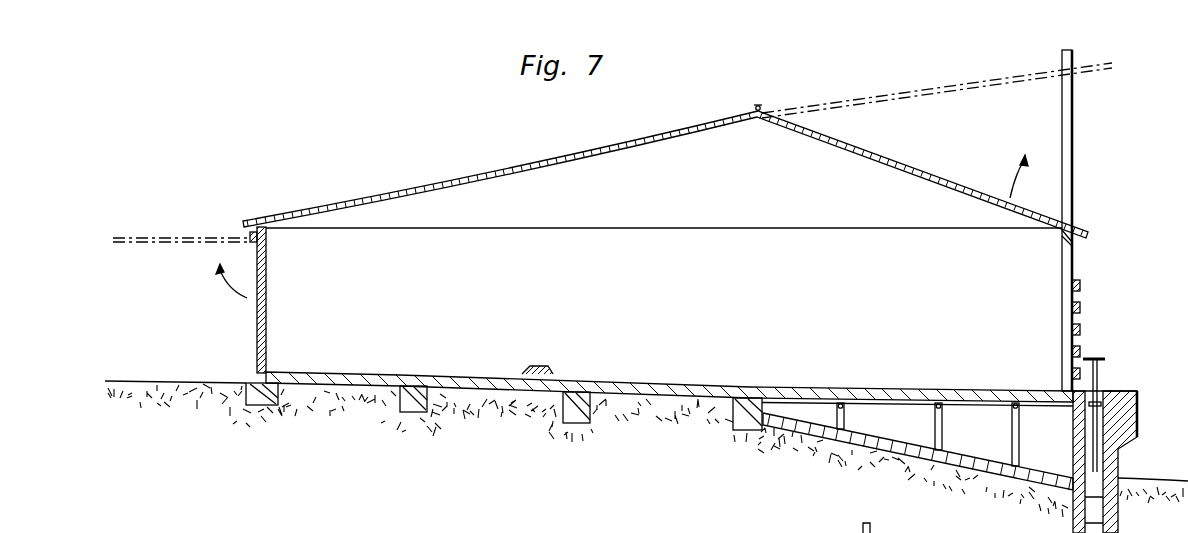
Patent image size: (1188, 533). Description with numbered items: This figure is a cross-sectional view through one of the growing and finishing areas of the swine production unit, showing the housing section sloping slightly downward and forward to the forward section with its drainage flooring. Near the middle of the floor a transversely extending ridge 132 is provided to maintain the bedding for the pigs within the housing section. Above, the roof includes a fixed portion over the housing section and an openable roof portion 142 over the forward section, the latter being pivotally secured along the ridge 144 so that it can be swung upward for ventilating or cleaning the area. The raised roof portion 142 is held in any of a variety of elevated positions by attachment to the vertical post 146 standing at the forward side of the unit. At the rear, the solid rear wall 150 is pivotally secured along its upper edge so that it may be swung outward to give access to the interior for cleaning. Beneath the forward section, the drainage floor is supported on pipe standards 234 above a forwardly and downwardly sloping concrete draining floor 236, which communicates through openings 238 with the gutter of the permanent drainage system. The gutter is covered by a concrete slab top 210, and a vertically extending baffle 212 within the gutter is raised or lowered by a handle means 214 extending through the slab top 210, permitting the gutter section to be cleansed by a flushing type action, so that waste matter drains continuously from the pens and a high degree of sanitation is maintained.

The transversely extending ridge 132 is at (532, 373).
The roof portion 142 is at (910, 167).
The ridge 144 is at (757, 106).
The vertical post 146 is at (1067, 153).
The rear wall 150 is at (263, 315).
The concrete slab top 210 is at (1110, 400).
The vertically extending baffle 212 is at (1097, 490).
The handle means 214 is at (1096, 357).
The pipe standards 234 is at (942, 441).
The concrete draining floor 236 is at (968, 470).
The openings 238 is at (1072, 478).